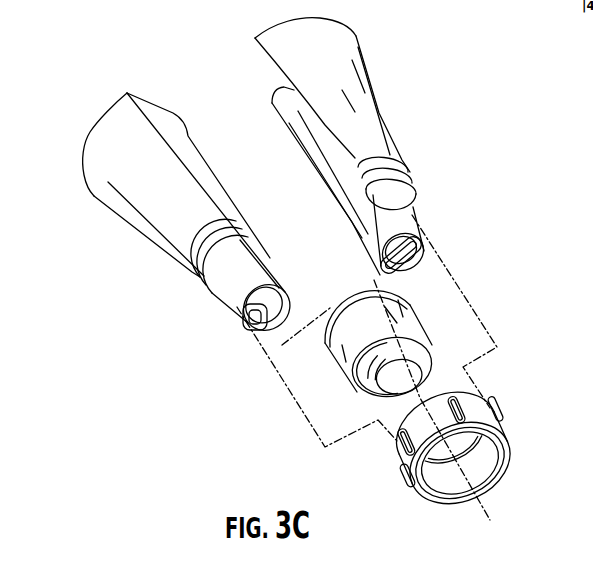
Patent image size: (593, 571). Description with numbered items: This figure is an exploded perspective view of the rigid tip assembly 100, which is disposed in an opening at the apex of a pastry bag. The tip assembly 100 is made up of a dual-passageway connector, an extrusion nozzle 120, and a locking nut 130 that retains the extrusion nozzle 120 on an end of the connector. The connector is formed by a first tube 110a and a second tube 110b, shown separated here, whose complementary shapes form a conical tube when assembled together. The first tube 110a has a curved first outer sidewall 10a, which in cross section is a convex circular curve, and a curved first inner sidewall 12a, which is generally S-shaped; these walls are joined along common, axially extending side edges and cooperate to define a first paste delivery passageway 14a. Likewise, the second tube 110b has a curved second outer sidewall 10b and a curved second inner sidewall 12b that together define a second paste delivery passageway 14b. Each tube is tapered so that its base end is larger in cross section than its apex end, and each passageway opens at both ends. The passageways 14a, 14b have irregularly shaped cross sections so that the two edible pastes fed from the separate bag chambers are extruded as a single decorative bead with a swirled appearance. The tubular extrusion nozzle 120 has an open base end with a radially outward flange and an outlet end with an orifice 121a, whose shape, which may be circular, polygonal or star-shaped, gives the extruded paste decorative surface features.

The rigid tip assembly 100 is at (137, 76).
The first outer sidewall 10a is at (360, 82).
The second outer sidewall 10b is at (107, 181).
The first tube 110a is at (363, 121).
The second tube 110b is at (147, 207).
The first inner sidewall 12a is at (355, 178).
The second inner sidewall 12b is at (178, 138).
The first paste delivery passageway 14a is at (413, 262).
The second paste delivery passageway 14b is at (281, 303).
The extrusion nozzle 120 is at (404, 327).
The orifice 121a is at (378, 393).
The locking nut 130 is at (471, 414).